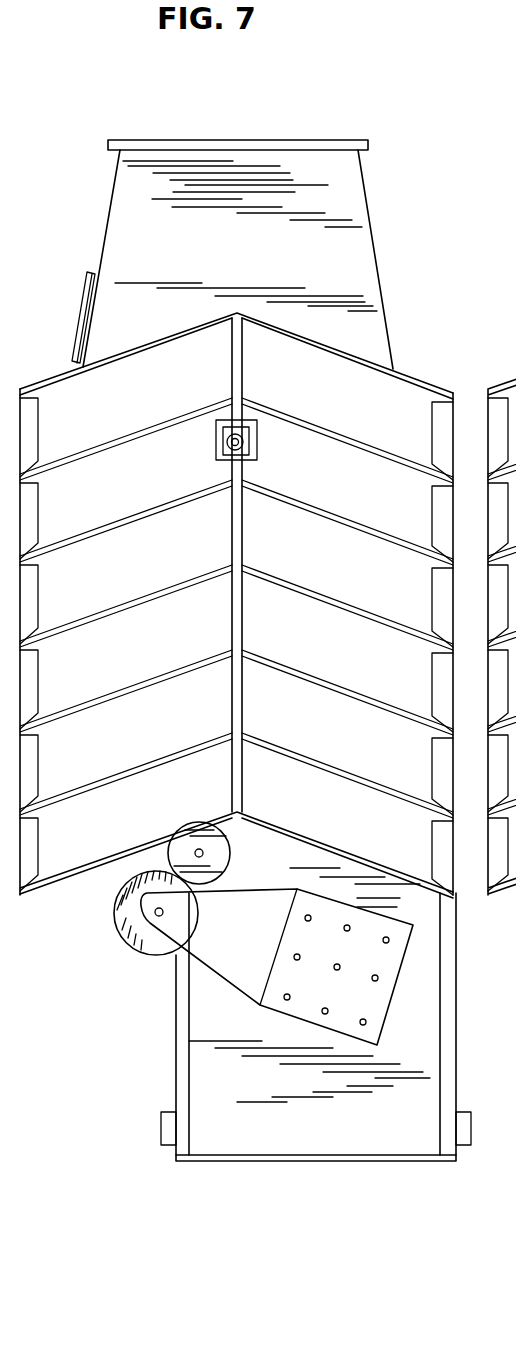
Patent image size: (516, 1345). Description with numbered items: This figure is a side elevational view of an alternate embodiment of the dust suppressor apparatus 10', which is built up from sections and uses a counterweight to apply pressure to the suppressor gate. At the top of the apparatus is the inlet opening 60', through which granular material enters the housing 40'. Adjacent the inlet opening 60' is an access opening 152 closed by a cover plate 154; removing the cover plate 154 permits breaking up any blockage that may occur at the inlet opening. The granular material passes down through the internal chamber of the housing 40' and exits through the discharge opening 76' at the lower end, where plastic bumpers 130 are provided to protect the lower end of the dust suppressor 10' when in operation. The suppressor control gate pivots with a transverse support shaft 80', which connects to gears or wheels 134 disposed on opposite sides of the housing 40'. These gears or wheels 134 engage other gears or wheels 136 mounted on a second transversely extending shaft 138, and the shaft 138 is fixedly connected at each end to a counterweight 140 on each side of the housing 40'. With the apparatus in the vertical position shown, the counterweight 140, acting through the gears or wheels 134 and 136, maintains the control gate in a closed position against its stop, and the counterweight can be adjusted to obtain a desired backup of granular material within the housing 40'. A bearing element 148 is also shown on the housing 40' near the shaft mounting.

The inlet opening 60' is at (238, 228).
The access opening 152 is at (97, 268).
The cover plate 154 is at (80, 294).
The housing 40' is at (236, 605).
The pivot bearing 148 is at (258, 450).
The gears or wheels 134 is at (184, 842).
The transverse support shaft 80' is at (239, 862).
The gears or wheels 136 is at (124, 918).
The second transversely extending shaft 138 is at (143, 950).
The counterweight 140 is at (287, 1012).
The discharge opening 76' is at (316, 1028).
The plastic bumpers 130 is at (472, 1140).
The dust suppressor apparatus 10' is at (97, 1071).